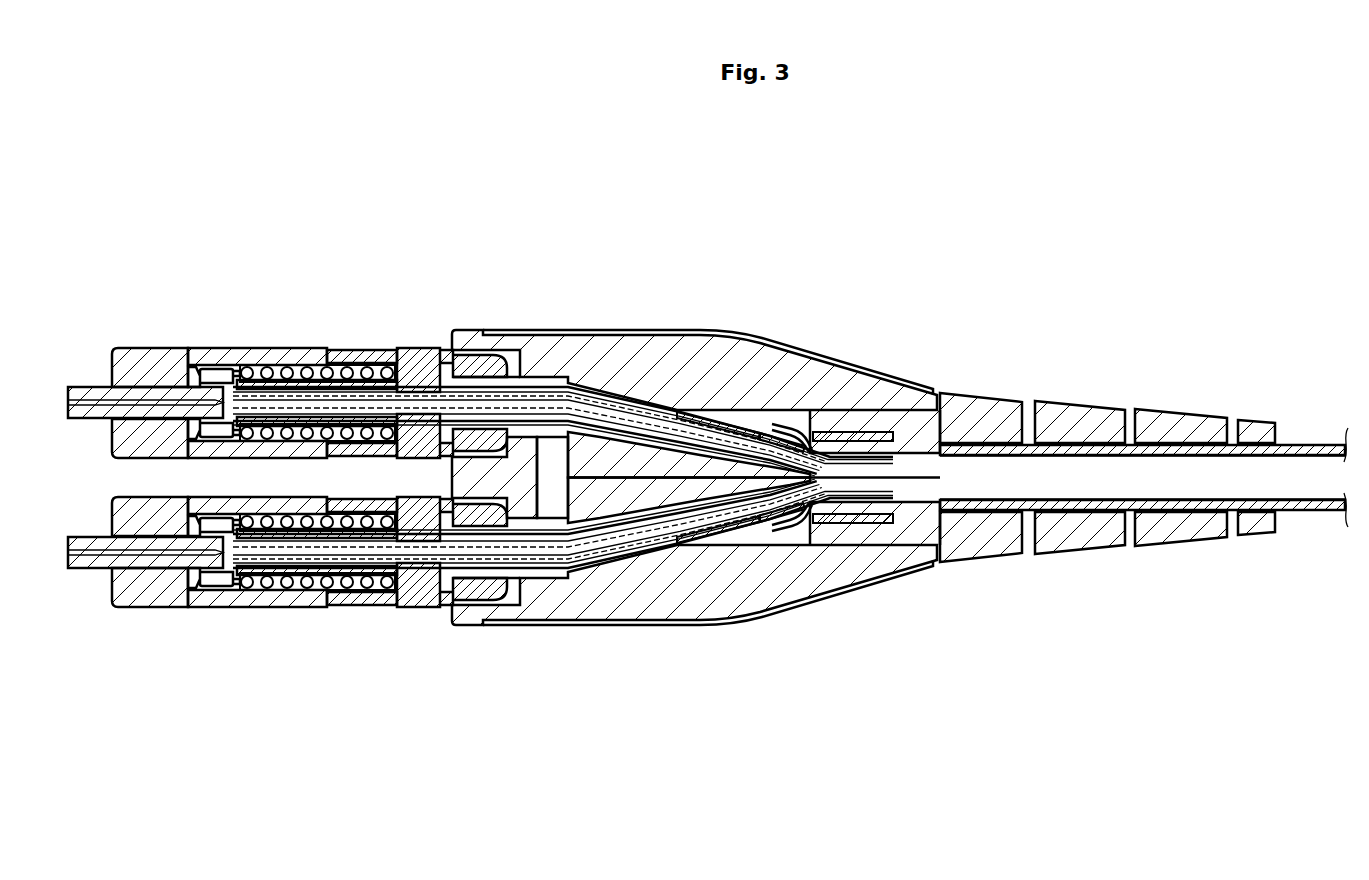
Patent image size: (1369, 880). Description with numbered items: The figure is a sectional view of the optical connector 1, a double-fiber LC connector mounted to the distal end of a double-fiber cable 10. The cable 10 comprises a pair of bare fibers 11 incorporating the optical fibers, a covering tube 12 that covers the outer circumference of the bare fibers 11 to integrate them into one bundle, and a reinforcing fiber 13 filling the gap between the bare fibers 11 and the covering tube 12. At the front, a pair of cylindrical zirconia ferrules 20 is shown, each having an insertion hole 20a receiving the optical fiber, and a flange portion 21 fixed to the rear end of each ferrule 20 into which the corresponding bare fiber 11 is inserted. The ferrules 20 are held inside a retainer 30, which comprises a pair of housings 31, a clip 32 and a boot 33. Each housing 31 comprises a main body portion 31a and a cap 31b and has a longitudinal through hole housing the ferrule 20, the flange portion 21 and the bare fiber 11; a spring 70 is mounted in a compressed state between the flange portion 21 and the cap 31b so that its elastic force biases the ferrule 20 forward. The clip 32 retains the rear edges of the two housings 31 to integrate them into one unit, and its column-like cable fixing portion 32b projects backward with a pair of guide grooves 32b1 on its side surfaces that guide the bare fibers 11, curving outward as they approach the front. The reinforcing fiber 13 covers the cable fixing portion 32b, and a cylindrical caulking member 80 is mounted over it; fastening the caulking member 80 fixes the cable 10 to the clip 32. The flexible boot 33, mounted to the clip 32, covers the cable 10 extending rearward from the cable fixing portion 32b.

The optical connector 1 is at (642, 212).
The double-fiber cable 10 is at (1315, 445).
The bare fibers 11 is at (651, 420).
The covering tube 12 is at (1197, 470).
The reinforcing fiber 13 is at (815, 432).
The ferrules 20 is at (90, 386).
The insertion hole 20a is at (92, 534).
The flange portion 21 is at (215, 365).
The retainer 30 is at (540, 324).
The housings 31 is at (248, 341).
The main body portion 31a is at (285, 366).
The cap 31b is at (410, 358).
The clip 32 is at (604, 429).
The cable fixing portion 32b is at (765, 520).
The guide grooves 32b1 is at (715, 417).
The boot 33 is at (833, 601).
The spring 70 is at (343, 365).
The caulking member 80 is at (773, 418).